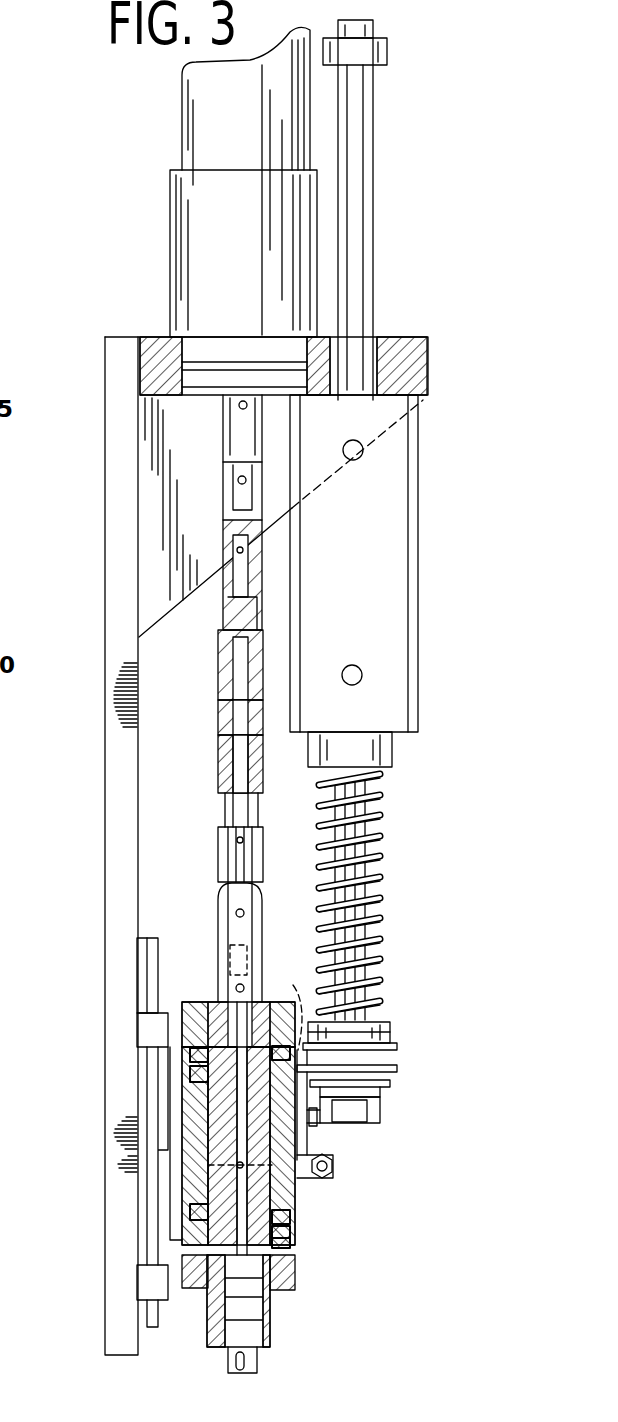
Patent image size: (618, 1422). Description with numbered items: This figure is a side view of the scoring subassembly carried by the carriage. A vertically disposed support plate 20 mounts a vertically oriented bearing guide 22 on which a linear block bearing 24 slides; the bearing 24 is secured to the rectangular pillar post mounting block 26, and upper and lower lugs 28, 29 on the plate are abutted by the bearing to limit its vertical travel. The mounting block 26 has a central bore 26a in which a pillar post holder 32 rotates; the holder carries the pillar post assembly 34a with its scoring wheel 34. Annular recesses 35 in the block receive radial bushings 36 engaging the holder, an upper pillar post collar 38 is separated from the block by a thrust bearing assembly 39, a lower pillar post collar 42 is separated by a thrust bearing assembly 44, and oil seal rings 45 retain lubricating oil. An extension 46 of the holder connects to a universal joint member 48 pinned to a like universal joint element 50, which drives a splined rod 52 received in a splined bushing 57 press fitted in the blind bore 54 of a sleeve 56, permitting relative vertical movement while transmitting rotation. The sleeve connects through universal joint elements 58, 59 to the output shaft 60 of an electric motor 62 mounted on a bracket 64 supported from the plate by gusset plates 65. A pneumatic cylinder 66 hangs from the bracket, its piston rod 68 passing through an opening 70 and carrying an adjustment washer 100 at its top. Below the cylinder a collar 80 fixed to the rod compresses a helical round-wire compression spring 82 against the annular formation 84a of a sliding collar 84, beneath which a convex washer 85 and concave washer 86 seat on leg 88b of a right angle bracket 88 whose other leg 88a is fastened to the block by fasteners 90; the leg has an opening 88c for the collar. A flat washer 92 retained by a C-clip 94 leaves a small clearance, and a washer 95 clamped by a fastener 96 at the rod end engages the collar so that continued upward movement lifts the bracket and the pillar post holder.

The support plate 20 is at (105, 817).
The bearing guide 22 is at (147, 940).
The linear block bearing 24 is at (160, 1108).
The pillar post mounting block 26 is at (282, 1190).
The central bore 26a is at (205, 1163).
The upper lug 28 is at (150, 1020).
The lower lug 29 is at (152, 1282).
The pillar post holder 32 is at (272, 1318).
The scoring wheel 34 is at (237, 1373).
The pillar post assembly 34a is at (254, 1326).
The annular recesses 35 is at (195, 1055).
The radial bushings 36 is at (195, 1076).
The upper pillar post collar 38 is at (195, 1004).
The thrust bearing assembly 39 is at (200, 1042).
The lower pillar post collar 42 is at (290, 1290).
The thrust bearing assembly 44 is at (290, 1248).
The oil seal rings 45 is at (263, 1045).
The extension 46 is at (229, 965).
The universal joint member 48 is at (222, 925).
The universal joint element 50 is at (218, 850).
The splined rod 52 is at (225, 808).
The blind bore 54 is at (218, 758).
The sleeve 56 is at (220, 640).
The splined bushing 57 is at (220, 720).
The universal joint element 58 is at (231, 521).
The universal joint element 59 is at (237, 437).
The output shaft 60 is at (264, 406).
The electric motor 62 is at (190, 238).
The bracket 64 is at (420, 372).
The gusset plates 65 is at (175, 465).
The pneumatic cylinder 66 is at (362, 586).
The piston rod 68 is at (352, 276).
The opening 70 is at (370, 347).
The collar 80 is at (394, 748).
The helical round-wire compression spring 82 is at (376, 908).
The sliding collar 84 is at (378, 945).
The annular formation 84a is at (392, 1040).
The convex washer 85 is at (397, 1046).
The concave washer 86 is at (398, 1066).
The right angle bracket 88 is at (402, 1076).
The leg 88a is at (350, 1167).
The leg 88b is at (392, 1076).
The opening 88c is at (295, 1003).
The fasteners 90 is at (318, 1126).
The flat washer 92 is at (385, 1085).
The C-clip 94 is at (382, 1098).
The washer 95 is at (365, 1124).
The fastener 96 is at (353, 1118).
The adjustment washer 100 is at (387, 48).